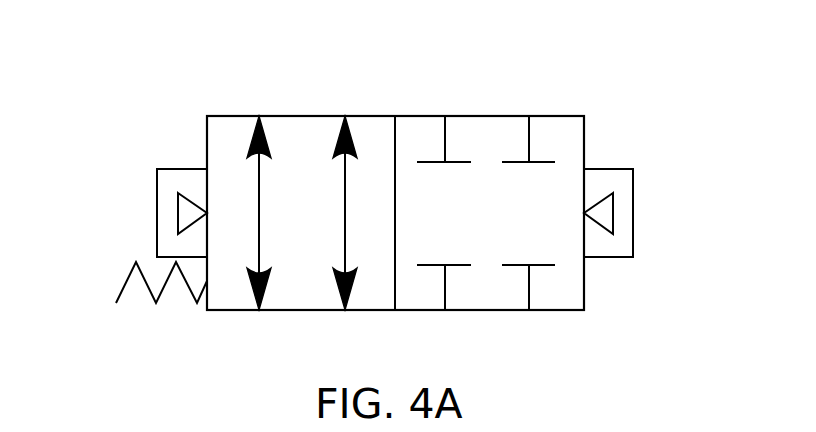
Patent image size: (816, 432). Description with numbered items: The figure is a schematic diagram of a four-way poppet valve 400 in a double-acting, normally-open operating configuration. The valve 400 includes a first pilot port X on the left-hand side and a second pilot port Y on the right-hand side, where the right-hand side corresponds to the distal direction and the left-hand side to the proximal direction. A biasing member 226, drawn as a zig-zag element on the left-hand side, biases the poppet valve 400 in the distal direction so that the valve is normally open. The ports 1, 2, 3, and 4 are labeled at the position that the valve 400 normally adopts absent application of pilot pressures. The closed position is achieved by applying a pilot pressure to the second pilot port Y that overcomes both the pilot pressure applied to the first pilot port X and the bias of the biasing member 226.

The poppet valve 400 is at (590, 68).
The biasing member 226 is at (124, 282).
The port 1 is at (259, 308).
The port 2 is at (259, 186).
The port 3 is at (345, 186).
The port 4 is at (345, 310).